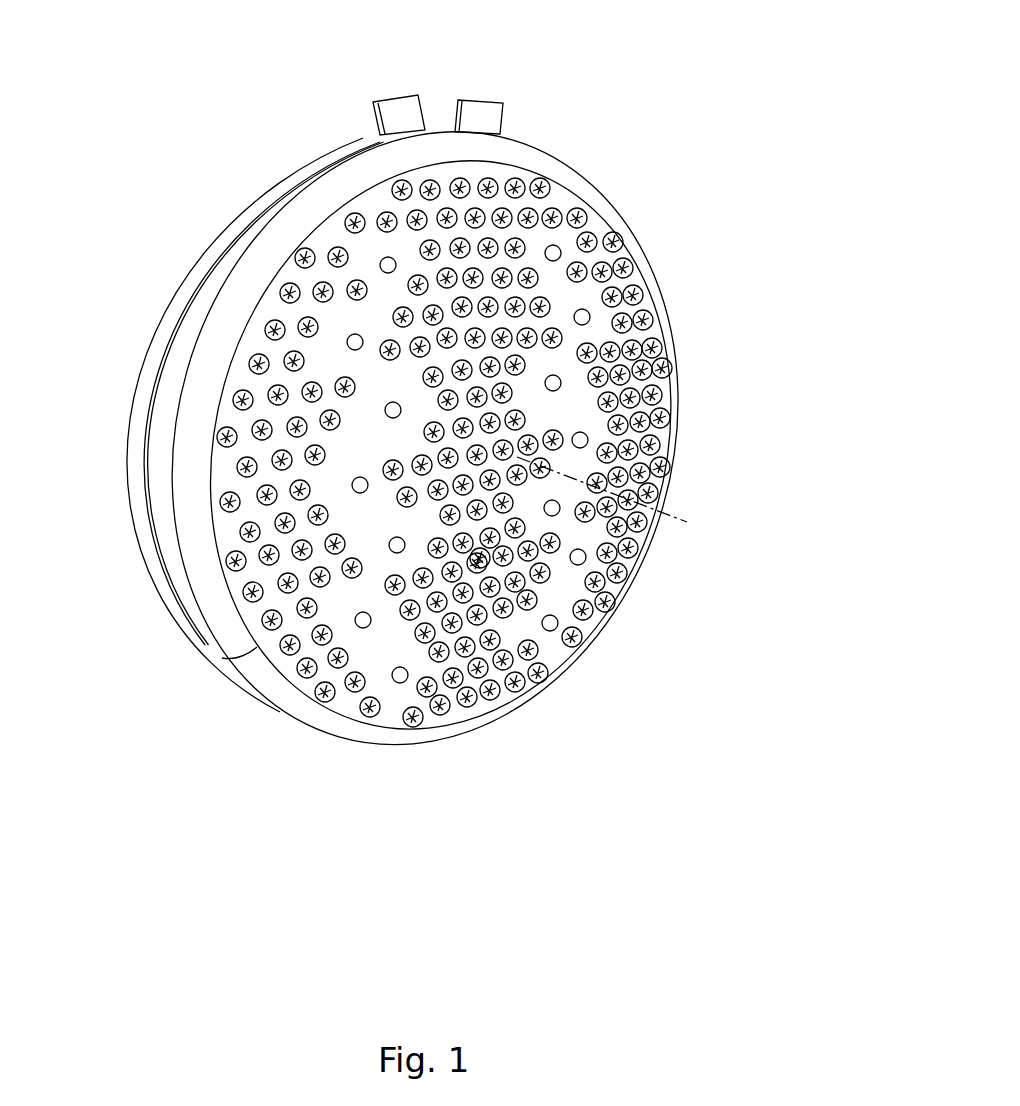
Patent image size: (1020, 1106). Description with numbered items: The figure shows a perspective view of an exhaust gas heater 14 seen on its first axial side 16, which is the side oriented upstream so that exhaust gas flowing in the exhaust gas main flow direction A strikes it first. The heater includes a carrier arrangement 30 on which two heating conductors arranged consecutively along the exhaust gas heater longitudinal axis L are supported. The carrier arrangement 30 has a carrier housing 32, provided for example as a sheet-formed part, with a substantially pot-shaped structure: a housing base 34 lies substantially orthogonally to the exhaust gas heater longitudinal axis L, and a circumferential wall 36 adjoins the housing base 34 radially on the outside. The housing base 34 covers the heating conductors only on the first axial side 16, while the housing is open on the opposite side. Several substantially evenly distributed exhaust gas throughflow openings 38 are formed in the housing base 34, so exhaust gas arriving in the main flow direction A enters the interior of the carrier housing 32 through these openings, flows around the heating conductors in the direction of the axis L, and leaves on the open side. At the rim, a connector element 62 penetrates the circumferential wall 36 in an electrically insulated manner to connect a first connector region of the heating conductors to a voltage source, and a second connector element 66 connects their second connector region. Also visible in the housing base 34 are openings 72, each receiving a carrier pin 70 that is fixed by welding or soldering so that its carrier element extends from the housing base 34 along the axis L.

The exhaust gas heater 14 is at (630, 96).
The first axial side 16 is at (565, 734).
The carrier arrangement 30 is at (650, 262).
The carrier housing 32 is at (372, 742).
The housing base 34 is at (573, 663).
The circumferential wall 36 is at (146, 470).
The exhaust gas throughflow openings 38 is at (303, 250).
The connector element 62 is at (486, 98).
The connector element 66 is at (396, 95).
The carrier pin 70 is at (406, 680).
The opening 72 is at (353, 491).
The exhaust gas heater longitudinal axis L is at (690, 521).
The exhaust gas main flow direction A is at (735, 543).